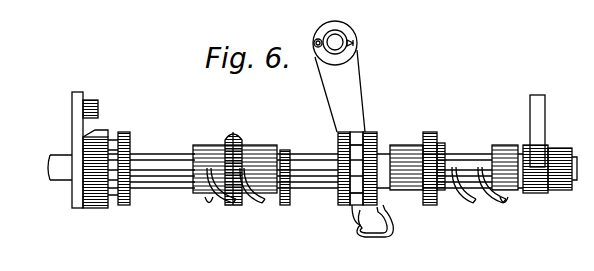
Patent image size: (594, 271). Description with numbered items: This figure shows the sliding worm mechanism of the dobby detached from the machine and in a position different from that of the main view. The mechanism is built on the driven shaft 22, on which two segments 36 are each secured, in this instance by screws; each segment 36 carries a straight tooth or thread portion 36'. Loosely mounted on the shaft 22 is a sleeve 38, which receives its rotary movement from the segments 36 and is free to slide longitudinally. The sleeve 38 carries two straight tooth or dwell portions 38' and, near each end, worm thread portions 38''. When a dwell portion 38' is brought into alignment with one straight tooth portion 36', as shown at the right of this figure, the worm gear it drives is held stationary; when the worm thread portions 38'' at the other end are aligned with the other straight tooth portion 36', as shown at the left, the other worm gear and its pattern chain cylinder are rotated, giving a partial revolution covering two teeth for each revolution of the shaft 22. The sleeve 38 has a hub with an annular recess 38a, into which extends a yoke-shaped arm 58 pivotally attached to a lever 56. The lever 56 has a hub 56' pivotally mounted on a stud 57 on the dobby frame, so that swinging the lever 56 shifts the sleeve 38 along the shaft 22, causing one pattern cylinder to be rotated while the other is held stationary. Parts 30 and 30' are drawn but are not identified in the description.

The driven shaft 22 is at (60, 172).
The bracket 30 is at (69, 150).
The bracket hub block 30' is at (90, 186).
The segment 36 is at (312, 150).
The straight tooth portion 36' is at (347, 154).
The sleeve 38 is at (408, 178).
The straight tooth or dwell portion 38' is at (349, 192).
The worm thread portion 38'' is at (356, 206).
The annular recess 38a is at (355, 158).
The lever 56 is at (352, 76).
The hub 56' is at (323, 69).
The stud 57 is at (330, 45).
The yoke-shaped arm 58 is at (357, 134).